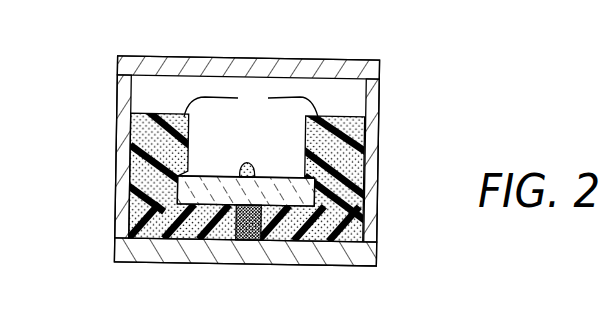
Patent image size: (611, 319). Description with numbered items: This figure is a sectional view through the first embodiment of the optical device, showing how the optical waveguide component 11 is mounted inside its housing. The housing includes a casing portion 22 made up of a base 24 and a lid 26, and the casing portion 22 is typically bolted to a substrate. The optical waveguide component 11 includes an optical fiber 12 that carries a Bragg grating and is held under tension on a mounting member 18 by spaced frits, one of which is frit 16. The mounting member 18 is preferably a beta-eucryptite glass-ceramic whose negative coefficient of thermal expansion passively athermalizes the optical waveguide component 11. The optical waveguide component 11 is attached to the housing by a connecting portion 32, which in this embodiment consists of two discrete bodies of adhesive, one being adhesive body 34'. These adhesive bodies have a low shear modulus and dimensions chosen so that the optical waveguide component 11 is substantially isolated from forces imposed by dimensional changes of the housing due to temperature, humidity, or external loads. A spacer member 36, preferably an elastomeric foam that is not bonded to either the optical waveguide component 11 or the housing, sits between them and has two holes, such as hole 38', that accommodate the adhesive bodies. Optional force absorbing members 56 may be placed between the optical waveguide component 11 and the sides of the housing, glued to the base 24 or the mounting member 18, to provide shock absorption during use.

The optical waveguide component 11 is at (268, 118).
The optical fiber 12 is at (254, 166).
The frit 16 is at (238, 166).
The mounting member 18 is at (221, 192).
The casing portion 22 is at (398, 84).
The base 24 is at (379, 143).
The lid 26 is at (306, 58).
The connecting portion 32 is at (128, 236).
The body of adhesive 34' is at (240, 255).
The spacer member 36 is at (366, 222).
The hole 38' is at (270, 256).
The force absorbing member 56 is at (251, 98).